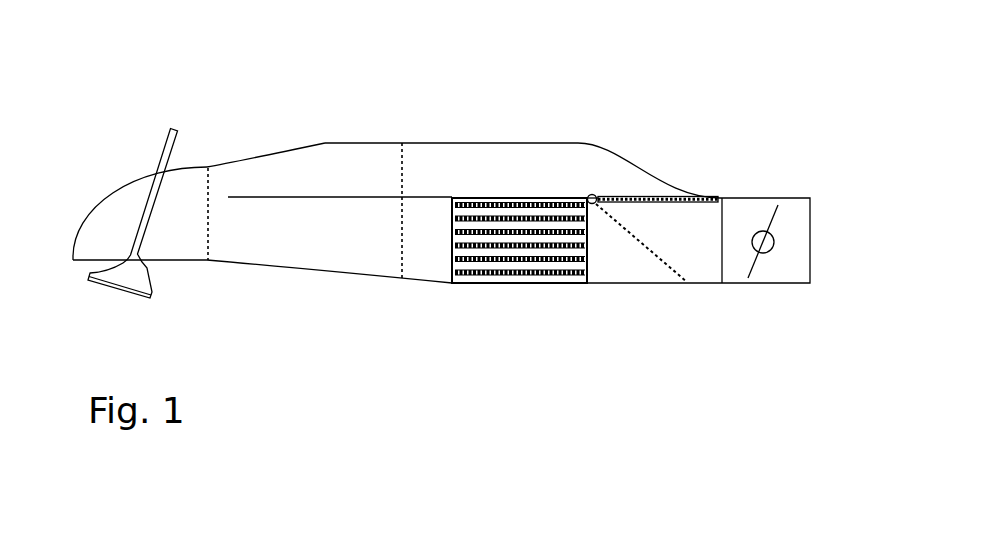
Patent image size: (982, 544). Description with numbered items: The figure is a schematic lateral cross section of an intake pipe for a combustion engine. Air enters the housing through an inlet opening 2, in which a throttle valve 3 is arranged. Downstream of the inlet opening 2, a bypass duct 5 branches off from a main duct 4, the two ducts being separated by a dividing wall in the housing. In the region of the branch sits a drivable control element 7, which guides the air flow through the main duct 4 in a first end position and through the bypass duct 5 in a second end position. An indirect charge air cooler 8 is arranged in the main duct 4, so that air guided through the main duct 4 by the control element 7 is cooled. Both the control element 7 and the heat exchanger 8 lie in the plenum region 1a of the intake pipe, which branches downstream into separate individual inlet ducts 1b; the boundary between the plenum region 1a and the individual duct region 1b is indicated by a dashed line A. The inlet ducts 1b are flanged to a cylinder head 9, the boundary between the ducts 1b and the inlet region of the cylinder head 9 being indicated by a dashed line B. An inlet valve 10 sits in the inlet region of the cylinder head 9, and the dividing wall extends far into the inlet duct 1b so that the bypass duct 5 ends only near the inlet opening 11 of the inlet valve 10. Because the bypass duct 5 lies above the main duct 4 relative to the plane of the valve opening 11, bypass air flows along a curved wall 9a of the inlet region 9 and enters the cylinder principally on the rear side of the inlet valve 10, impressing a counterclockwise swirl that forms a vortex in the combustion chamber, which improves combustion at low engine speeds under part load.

The plenum region 1a is at (553, 160).
The individual inlet duct 1b is at (315, 165).
The inlet opening 2 is at (737, 262).
The throttle valve 3 is at (760, 233).
The main duct 4 is at (432, 263).
The bypass duct 5 is at (343, 172).
The control element 7 is at (625, 198).
The indirect charge air cooler 8 is at (547, 265).
The cylinder head 9 is at (178, 242).
The curved wall 9a is at (105, 200).
The inlet valve 10 is at (163, 152).
The inlet opening of the inlet valve 11 is at (157, 302).
The dashed line A is at (402, 227).
The dashed line B is at (212, 193).